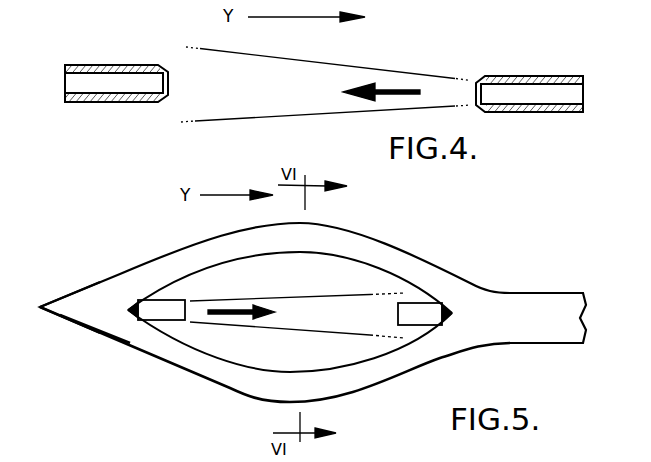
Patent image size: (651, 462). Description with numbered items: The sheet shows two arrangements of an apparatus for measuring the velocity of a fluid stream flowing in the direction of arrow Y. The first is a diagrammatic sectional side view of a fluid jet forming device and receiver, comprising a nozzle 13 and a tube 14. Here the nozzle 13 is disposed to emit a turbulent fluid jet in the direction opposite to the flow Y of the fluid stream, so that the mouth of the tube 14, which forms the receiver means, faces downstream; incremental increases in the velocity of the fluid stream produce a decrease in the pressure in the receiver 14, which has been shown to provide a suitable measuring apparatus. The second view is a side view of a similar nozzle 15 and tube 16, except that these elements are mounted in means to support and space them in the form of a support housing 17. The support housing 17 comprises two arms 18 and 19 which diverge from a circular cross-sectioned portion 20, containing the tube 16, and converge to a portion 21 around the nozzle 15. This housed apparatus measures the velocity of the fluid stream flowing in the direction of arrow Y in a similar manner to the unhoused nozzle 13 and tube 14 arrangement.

In FIG. 4, the nozzle 13 is at (538, 96).
In FIG. 4, the tube 14 is at (144, 83).
In FIG. 5, the nozzle 15 is at (157, 302).
In FIG. 5, the tube 16 is at (420, 312).
In FIG. 5, the support housing 17 is at (78, 302).
In FIG. 5, the arm 18 is at (379, 243).
In FIG. 5, the arm 19 is at (413, 362).
In FIG. 5, the circular cross-sectioned portion 20 is at (520, 298).
In FIG. 5, the portion 21 is at (93, 331).